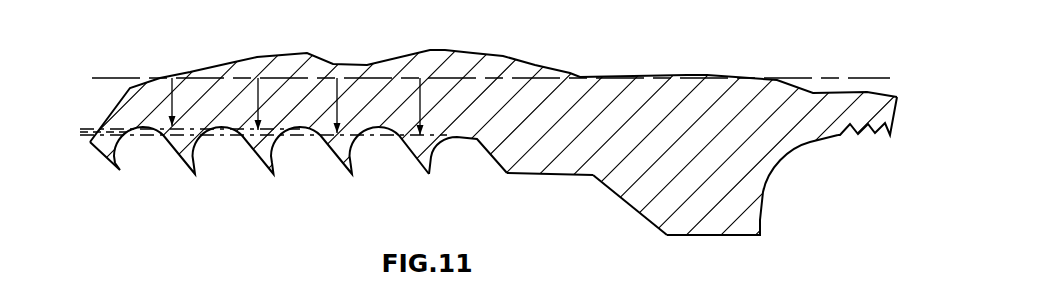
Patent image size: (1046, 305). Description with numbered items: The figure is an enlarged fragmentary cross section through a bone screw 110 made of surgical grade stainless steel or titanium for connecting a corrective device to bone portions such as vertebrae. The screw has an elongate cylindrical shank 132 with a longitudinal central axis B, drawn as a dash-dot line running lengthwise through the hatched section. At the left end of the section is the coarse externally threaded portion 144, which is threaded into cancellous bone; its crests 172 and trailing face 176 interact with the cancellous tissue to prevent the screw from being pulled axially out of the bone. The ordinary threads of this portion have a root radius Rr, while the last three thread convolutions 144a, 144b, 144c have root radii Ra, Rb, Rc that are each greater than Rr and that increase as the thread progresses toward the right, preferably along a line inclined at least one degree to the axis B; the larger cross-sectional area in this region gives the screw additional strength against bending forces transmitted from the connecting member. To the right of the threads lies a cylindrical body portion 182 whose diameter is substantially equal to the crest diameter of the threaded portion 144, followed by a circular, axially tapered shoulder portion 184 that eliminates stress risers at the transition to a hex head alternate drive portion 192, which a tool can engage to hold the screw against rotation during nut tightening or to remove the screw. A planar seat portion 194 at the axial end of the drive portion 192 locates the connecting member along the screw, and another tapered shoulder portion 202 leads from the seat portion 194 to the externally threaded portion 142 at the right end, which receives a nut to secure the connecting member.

The bone screw 110 is at (820, 180).
The shank 132 is at (483, 63).
The threaded portion 142 is at (873, 143).
The threaded portion 144 is at (337, 193).
The thread convolution 144a is at (276, 163).
The thread convolution 144b is at (353, 163).
The thread convolution 144c is at (431, 166).
The crests 172 is at (120, 170).
The trailing face 176 is at (198, 164).
The cylindrical body portion 182 is at (538, 176).
The shoulder portion 184 is at (636, 219).
The alternate drive portion 192 is at (702, 236).
The seat portion 194 is at (763, 222).
The shoulder portion 202 is at (777, 167).
The longitudinal central axis B is at (843, 78).
The root radius Rr is at (173, 98).
The root radius Ra is at (259, 97).
The root radius Rb is at (338, 98).
The root radius Rc is at (421, 98).